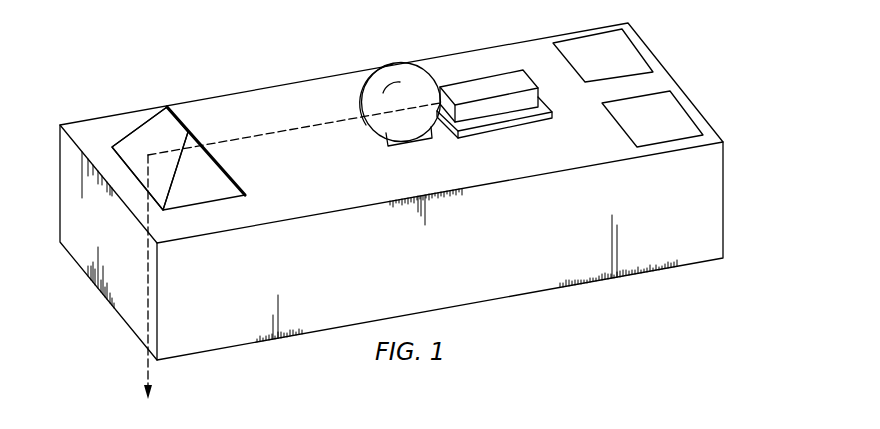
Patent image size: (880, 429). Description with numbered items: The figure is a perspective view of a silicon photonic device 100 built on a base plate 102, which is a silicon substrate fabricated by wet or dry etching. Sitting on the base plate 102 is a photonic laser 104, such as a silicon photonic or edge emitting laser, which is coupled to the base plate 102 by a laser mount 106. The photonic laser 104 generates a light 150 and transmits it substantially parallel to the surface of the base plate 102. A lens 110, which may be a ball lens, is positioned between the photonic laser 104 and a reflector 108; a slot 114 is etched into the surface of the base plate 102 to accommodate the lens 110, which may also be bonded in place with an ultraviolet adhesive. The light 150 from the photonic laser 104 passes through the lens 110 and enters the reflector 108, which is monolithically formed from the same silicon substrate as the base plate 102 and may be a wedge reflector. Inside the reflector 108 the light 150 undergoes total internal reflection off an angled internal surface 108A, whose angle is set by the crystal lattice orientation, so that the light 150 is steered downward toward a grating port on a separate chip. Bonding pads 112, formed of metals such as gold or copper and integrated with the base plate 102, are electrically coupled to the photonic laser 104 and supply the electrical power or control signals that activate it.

The silicon photonic device 100 is at (117, 30).
The base plate 102 is at (706, 210).
The photonic laser 104 is at (487, 85).
The laser mount 106 is at (503, 128).
The reflector 108 is at (203, 192).
The angled internal surface 108A is at (158, 127).
The lens 110 is at (383, 65).
The bonding pads 112 is at (622, 53).
The slot 114 is at (390, 143).
The light 150 is at (283, 132).